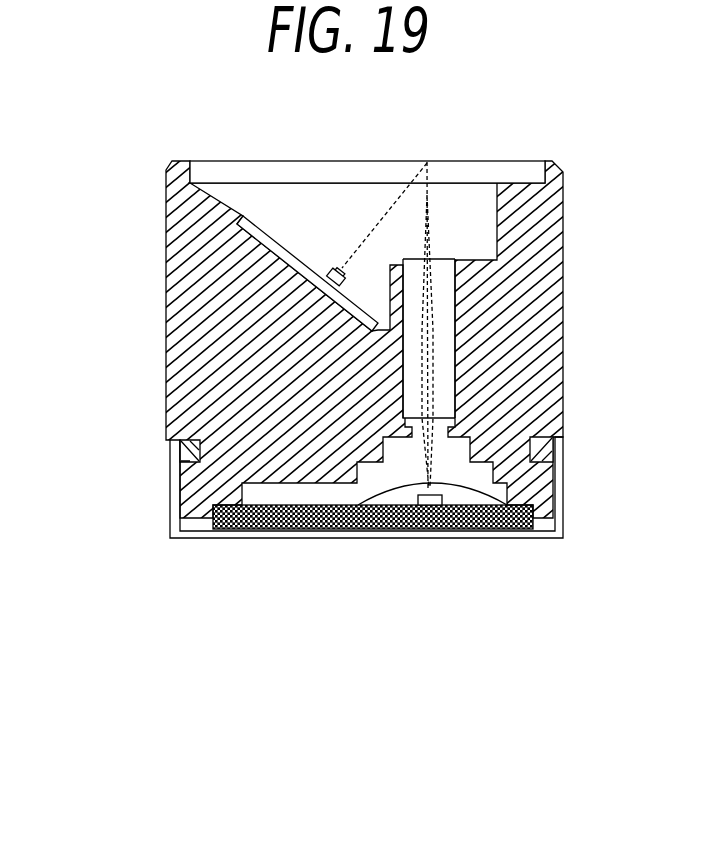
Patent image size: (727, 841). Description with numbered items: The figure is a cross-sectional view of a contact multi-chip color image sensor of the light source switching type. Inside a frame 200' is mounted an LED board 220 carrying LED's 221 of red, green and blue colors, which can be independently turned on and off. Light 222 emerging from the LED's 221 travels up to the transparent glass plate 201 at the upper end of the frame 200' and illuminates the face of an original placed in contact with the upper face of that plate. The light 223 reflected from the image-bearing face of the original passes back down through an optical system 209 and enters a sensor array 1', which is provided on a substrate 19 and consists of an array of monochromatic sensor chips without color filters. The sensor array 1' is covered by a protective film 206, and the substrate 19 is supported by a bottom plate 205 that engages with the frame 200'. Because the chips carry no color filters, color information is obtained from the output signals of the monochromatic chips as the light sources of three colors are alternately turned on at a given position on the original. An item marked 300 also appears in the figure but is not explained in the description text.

The frame 200' is at (301, 339).
The transparent glass plate 201 is at (220, 163).
The optical system 209 is at (443, 294).
The LED board 220 is at (253, 233).
The LED 221 is at (323, 280).
The light emerging from the LED's 222 is at (400, 198).
The light reflected from the original 223 is at (433, 213).
The incident object light 300 is at (427, 160).
The bottom plate 205 is at (566, 531).
The substrate 19 is at (262, 527).
The protective film 206 is at (393, 498).
The sensor array 1' is at (459, 557).